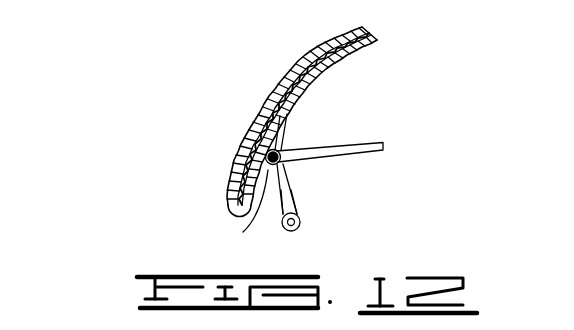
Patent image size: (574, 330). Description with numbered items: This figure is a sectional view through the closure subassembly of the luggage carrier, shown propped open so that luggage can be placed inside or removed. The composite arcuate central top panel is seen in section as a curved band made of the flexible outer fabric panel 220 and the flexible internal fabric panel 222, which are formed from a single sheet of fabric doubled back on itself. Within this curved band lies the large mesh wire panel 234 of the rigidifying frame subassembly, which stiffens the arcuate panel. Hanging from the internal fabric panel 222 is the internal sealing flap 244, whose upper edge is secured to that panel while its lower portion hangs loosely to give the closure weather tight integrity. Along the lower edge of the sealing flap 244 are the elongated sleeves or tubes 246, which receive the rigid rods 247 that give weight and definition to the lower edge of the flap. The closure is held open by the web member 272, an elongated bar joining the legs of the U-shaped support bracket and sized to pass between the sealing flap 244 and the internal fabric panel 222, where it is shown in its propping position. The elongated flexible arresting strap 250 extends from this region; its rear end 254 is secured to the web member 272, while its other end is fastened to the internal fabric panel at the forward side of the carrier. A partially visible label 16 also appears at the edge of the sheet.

The housing 16 is at (0, 174).
The flexible outer fabric panel 220 is at (255, 112).
The flexible internal fabric panel 222 is at (348, 55).
The large mesh wire panel 234 is at (313, 48).
The web member 272 is at (287, 140).
The arresting strap 250 is at (355, 157).
The internal sealing flap 244 is at (289, 176).
The elongated sleeves or tubes 246 is at (281, 212).
The rigid rods 247 is at (301, 223).
The rear end of strap 254 is at (243, 232).